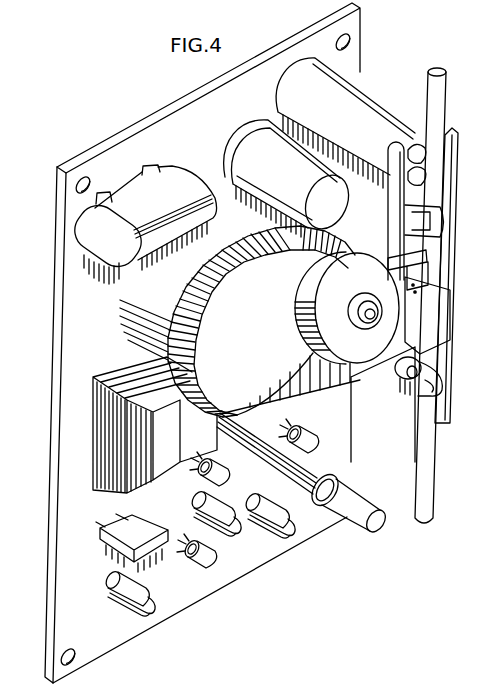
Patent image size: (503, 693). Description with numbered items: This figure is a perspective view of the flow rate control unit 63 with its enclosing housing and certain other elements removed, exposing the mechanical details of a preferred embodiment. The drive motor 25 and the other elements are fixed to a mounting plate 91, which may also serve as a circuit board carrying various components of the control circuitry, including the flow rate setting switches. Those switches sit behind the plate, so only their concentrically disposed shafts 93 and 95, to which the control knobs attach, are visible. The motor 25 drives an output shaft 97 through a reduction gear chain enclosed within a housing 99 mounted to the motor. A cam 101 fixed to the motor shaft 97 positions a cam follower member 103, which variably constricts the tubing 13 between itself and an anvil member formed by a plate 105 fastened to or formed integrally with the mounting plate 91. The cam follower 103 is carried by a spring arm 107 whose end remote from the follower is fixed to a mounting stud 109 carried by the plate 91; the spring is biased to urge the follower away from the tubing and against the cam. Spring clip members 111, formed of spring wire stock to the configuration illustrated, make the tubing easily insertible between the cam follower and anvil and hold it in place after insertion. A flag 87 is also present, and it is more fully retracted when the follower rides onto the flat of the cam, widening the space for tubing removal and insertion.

The control unit 63 is at (98, 144).
The mounting plate 91 is at (70, 558).
The drive motor 25 is at (128, 296).
The mounting stud 109 is at (326, 108).
The spring arm 107 is at (396, 193).
The cam follower member 103 is at (392, 258).
The spring clip members 111 is at (438, 212).
The flag 87 is at (442, 334).
The housing 99 is at (266, 248).
The cam 101 is at (324, 308).
The output shaft 97 is at (388, 311).
The plate 105 is at (379, 384).
The tubing 13 is at (423, 462).
The shaft 95 is at (278, 467).
The shaft 93 is at (356, 521).